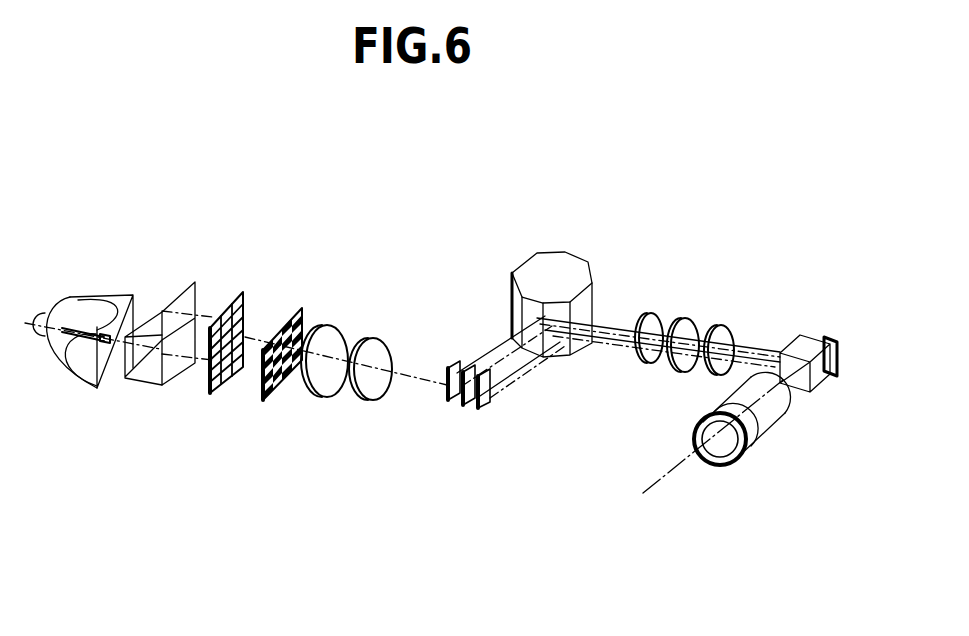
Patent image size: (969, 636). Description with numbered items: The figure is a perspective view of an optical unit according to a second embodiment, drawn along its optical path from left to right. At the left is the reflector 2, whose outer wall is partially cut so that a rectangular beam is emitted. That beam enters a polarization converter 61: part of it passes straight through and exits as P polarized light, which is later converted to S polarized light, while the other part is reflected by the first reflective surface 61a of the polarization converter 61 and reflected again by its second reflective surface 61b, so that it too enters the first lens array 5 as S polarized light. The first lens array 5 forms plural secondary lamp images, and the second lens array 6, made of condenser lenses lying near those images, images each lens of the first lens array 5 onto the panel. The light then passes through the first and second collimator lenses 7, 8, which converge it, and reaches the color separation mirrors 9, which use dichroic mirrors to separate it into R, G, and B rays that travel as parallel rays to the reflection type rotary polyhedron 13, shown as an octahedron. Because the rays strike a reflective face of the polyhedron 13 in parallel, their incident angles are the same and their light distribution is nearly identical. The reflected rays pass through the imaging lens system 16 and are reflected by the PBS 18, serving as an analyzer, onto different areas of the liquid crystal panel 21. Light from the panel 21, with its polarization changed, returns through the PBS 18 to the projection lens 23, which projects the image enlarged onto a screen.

The reflector 2 is at (71, 297).
The polarization converter 61 is at (165, 338).
The first reflective surface 61a is at (143, 374).
The second reflective surface 61b is at (158, 308).
The first lens array 5 is at (234, 293).
The second lens array 6 is at (292, 308).
The first collimator lens 7 is at (338, 325).
The second collimator lens 8 is at (383, 337).
The color separation mirror set 9 is at (489, 407).
The reflection type rotary polyhedron 13 is at (568, 262).
The imaging lens system 16 is at (643, 306).
The liquid crystal panel 21 is at (814, 333).
The PBS 18 is at (824, 376).
The projection lens 23 is at (769, 414).